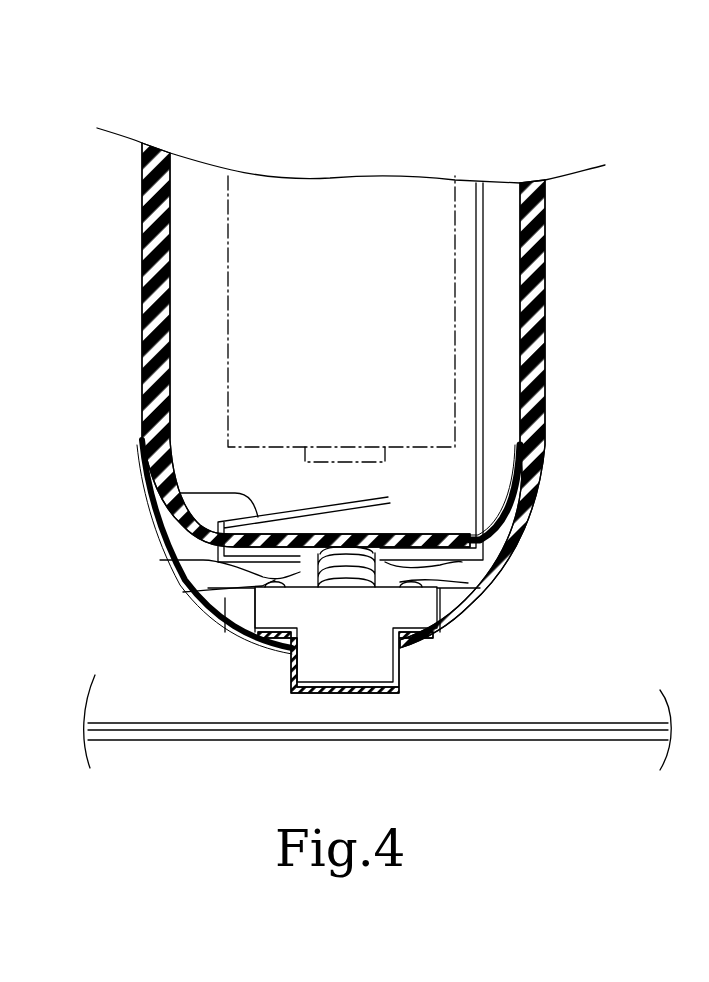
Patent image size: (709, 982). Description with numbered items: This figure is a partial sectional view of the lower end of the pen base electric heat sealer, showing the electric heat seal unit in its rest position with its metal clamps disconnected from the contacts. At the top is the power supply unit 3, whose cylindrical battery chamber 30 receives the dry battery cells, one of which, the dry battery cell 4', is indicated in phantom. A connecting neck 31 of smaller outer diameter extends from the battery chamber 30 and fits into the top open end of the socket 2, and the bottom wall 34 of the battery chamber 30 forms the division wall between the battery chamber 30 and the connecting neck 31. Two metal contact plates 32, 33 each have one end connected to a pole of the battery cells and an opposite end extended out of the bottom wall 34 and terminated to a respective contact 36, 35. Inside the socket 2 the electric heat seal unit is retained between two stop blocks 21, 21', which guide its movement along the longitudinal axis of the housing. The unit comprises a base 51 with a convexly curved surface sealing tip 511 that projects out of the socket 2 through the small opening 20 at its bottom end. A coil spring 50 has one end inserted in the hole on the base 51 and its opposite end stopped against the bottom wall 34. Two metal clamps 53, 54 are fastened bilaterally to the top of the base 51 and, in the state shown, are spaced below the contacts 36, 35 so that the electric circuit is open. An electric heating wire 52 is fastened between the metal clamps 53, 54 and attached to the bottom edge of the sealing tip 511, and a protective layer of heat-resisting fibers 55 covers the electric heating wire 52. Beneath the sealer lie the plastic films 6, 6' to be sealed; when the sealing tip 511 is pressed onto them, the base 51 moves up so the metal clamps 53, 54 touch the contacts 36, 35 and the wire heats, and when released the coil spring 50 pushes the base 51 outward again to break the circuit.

The socket 2 is at (140, 437).
The power supply unit 3 is at (140, 222).
The battery chamber 30 is at (150, 298).
The connecting neck 31 is at (527, 355).
The metal contact plate 32 is at (485, 240).
The metal contact plate 33 is at (180, 493).
The bottom wall 34 is at (413, 538).
The contact 35 is at (162, 561).
The contact 36 is at (462, 572).
The dry battery cell 4' is at (332, 297).
The coil spring 50 is at (300, 530).
The base 51 is at (425, 612).
The convexly curved surface sealing tip 511 is at (400, 665).
The electric heating wire 52 is at (360, 686).
The metal clamp 53 is at (470, 583).
The metal clamp 54 is at (185, 592).
The protective layer of heat-resisting fibers 55 is at (397, 690).
The opening 20 is at (291, 658).
The stop block 21 is at (198, 615).
The stop block 21' is at (499, 614).
The plastic film 6 is at (378, 722).
The plastic film 6' is at (378, 768).